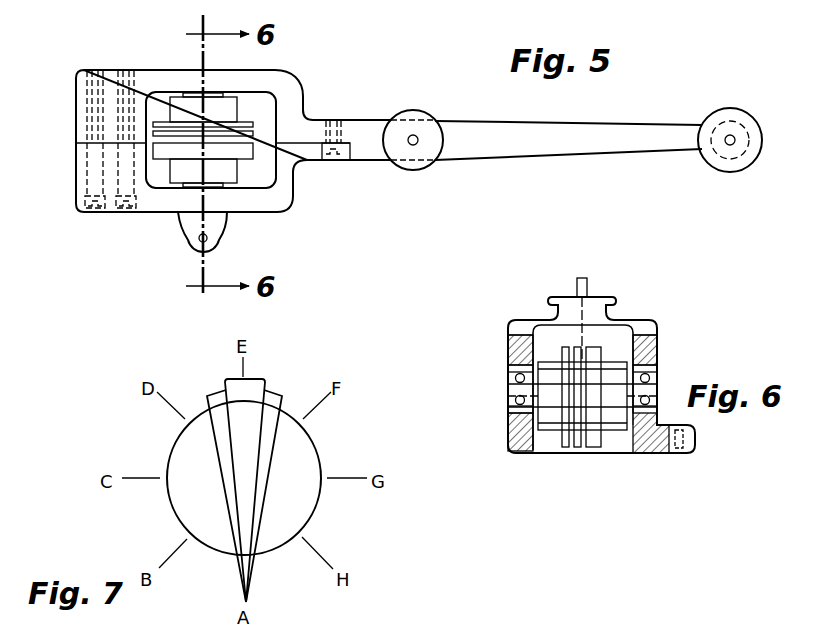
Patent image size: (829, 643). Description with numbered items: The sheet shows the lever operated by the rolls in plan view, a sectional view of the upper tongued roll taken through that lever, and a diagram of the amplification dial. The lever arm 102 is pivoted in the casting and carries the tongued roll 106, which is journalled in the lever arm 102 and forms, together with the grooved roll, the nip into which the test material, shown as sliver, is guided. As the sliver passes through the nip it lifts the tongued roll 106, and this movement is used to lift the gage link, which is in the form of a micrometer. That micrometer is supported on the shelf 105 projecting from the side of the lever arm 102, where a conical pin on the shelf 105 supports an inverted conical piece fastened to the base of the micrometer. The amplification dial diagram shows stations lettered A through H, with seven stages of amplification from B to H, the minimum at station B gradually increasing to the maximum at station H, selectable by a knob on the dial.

In FIG. 5, the lever arm 102 is at (573, 131).
In FIG. 6, the lever arm 102 is at (647, 353).
In FIG. 5, the shelf 105 is at (214, 226).
In FIG. 6, the shelf 105 is at (664, 440).
In FIG. 6, the tongued roll 106 is at (594, 348).